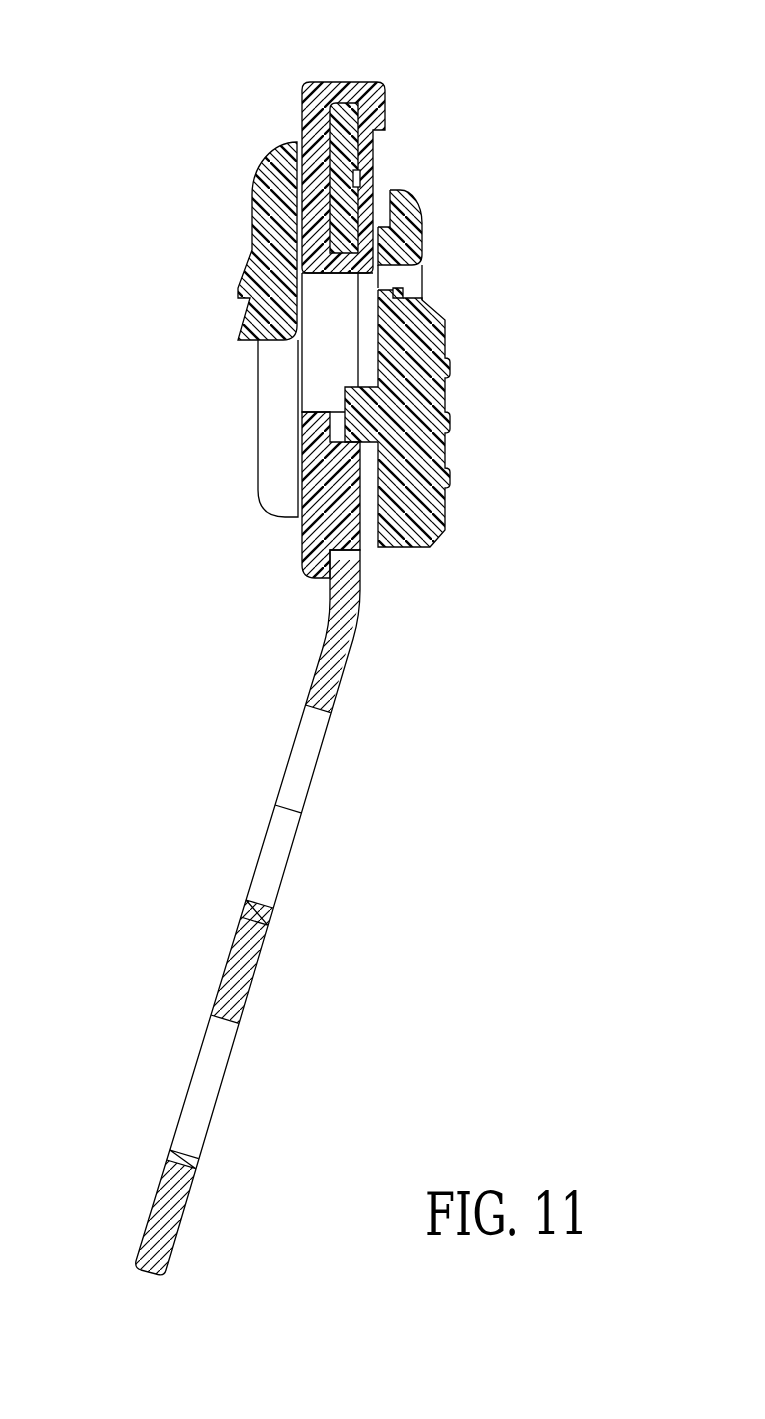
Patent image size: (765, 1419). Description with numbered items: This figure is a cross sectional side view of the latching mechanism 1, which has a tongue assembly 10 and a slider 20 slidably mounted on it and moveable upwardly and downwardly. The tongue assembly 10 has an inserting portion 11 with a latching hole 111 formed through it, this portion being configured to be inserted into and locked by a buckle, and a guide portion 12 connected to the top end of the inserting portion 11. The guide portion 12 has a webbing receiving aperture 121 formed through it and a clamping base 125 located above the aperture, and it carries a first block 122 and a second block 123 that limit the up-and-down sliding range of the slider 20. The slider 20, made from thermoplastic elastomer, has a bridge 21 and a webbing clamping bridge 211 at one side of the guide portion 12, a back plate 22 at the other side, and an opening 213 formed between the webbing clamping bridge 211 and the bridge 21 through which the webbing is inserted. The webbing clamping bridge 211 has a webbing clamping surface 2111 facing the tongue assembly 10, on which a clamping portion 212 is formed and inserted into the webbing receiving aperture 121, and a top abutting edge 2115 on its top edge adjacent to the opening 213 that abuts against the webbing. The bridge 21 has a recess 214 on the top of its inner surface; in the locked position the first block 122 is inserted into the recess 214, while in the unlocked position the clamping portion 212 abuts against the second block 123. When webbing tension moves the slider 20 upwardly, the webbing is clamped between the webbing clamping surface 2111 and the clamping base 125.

The latching mechanism 1 is at (346, 662).
The tongue assembly 10 is at (273, 662).
The inserting portion 11 is at (242, 925).
The latching hole 111 is at (185, 1158).
The guide portion 12 is at (328, 302).
The webbing receiving aperture 121 is at (322, 350).
The first block 122 is at (377, 118).
The second block 123 is at (332, 437).
The clamping base 125 is at (308, 250).
The slider 20 is at (345, 328).
The bridge 21 is at (446, 341).
The webbing clamping bridge 211 is at (446, 418).
The webbing clamping surface 2111 is at (381, 323).
The top abutting edge 2115 is at (401, 291).
The clamping portion 212 is at (358, 398).
The opening 213 is at (406, 272).
The recess 214 is at (385, 192).
The back plate 22 is at (257, 277).